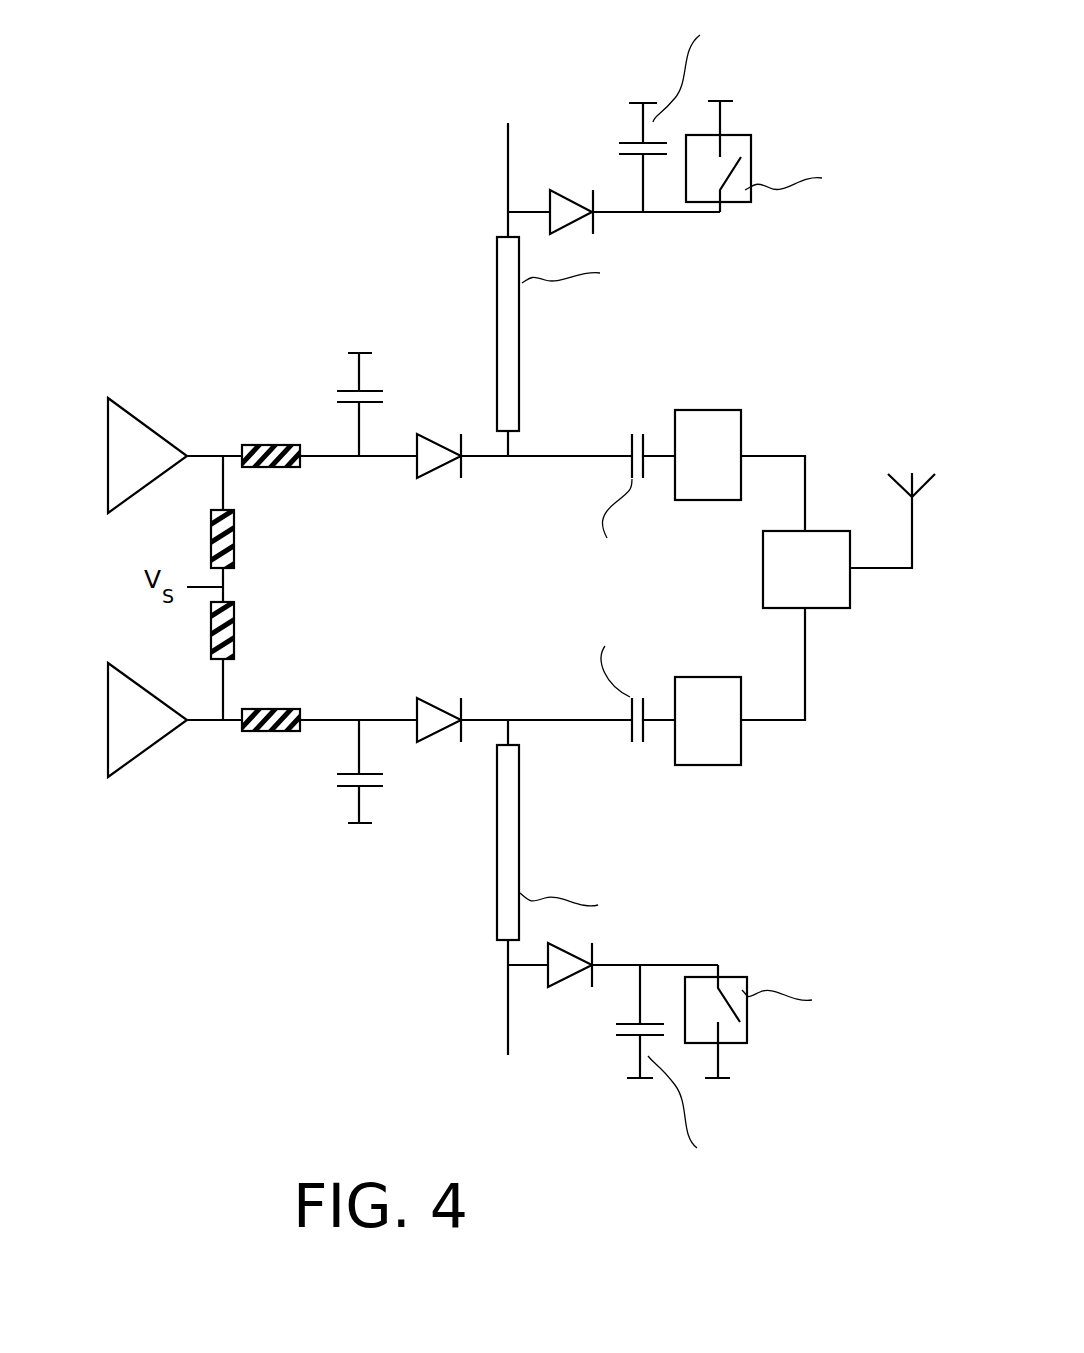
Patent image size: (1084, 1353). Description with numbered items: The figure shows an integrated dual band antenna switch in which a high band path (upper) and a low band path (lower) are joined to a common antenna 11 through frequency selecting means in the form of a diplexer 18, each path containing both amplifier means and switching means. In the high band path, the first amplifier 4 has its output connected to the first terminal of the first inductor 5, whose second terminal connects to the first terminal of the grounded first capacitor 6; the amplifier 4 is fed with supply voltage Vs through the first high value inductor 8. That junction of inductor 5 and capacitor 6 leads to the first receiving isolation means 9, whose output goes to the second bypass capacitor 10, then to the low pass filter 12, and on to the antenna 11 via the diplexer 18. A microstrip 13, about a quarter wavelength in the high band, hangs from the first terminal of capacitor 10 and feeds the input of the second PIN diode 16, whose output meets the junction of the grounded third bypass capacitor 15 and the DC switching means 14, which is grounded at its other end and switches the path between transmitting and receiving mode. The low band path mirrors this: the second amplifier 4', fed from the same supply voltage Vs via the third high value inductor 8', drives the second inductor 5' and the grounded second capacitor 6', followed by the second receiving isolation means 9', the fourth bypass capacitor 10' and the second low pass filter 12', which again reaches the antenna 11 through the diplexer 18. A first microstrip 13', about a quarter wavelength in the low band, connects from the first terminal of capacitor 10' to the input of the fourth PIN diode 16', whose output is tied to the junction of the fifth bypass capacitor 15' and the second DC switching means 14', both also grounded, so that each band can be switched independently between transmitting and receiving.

The first amplifier 4 is at (147, 415).
The second amplifier 4' is at (147, 762).
The first inductor 5 is at (273, 425).
The second inductor 5' is at (273, 757).
The first capacitor 6 is at (344, 370).
The second capacitor 6' is at (342, 808).
The first high value inductor 8 is at (201, 544).
The third high value inductor 8' is at (202, 636).
The first receiving isolation means 9 is at (446, 429).
The second receiving isolation means 9' is at (439, 753).
The second bypass capacitor 10 is at (667, 459).
The fourth bypass capacitor 10' is at (658, 721).
The antenna 11 is at (912, 472).
The low pass filter 12 is at (708, 418).
The second low pass filter 12' is at (708, 760).
The microstrip 13 is at (610, 289).
The first microstrip 13' is at (609, 887).
The DC switching means 14 is at (816, 161).
The second DC switching means 14' is at (808, 1024).
The third bypass capacitor 15 is at (695, 106).
The fifth bypass capacitor 15' is at (694, 1077).
The second PIN diode 16 is at (614, 180).
The fourth PIN diode 16' is at (613, 1002).
The diplexer 18 is at (843, 610).